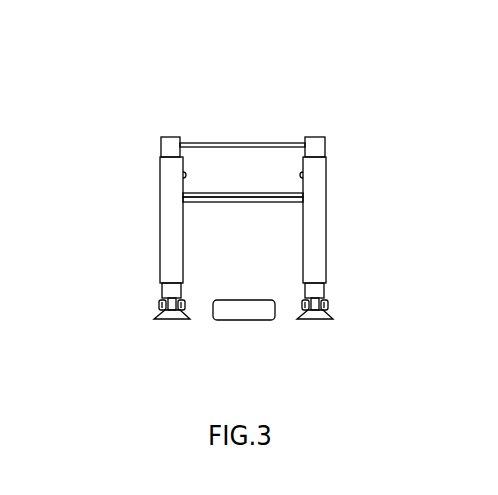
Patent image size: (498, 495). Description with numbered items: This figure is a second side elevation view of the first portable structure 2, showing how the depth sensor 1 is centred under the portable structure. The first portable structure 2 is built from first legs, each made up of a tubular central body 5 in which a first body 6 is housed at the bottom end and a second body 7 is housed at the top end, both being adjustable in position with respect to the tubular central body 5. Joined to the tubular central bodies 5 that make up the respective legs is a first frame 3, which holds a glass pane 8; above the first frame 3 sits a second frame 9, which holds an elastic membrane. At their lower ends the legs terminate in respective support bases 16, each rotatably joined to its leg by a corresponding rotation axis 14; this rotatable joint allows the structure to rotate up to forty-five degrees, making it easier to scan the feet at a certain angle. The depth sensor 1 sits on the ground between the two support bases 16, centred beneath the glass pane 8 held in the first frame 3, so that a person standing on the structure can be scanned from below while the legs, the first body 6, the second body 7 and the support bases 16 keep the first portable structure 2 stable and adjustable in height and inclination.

The depth sensor 1 is at (240, 313).
The first portable structure 2 is at (140, 168).
The first frame 3 is at (258, 199).
The tubular central body 5 is at (160, 203).
The first body 6 is at (162, 292).
The second body 7 is at (326, 143).
The glass pane 8 is at (222, 195).
The second frame 9 is at (198, 143).
The rotation axis 14 is at (159, 307).
The support base 16 is at (160, 323).